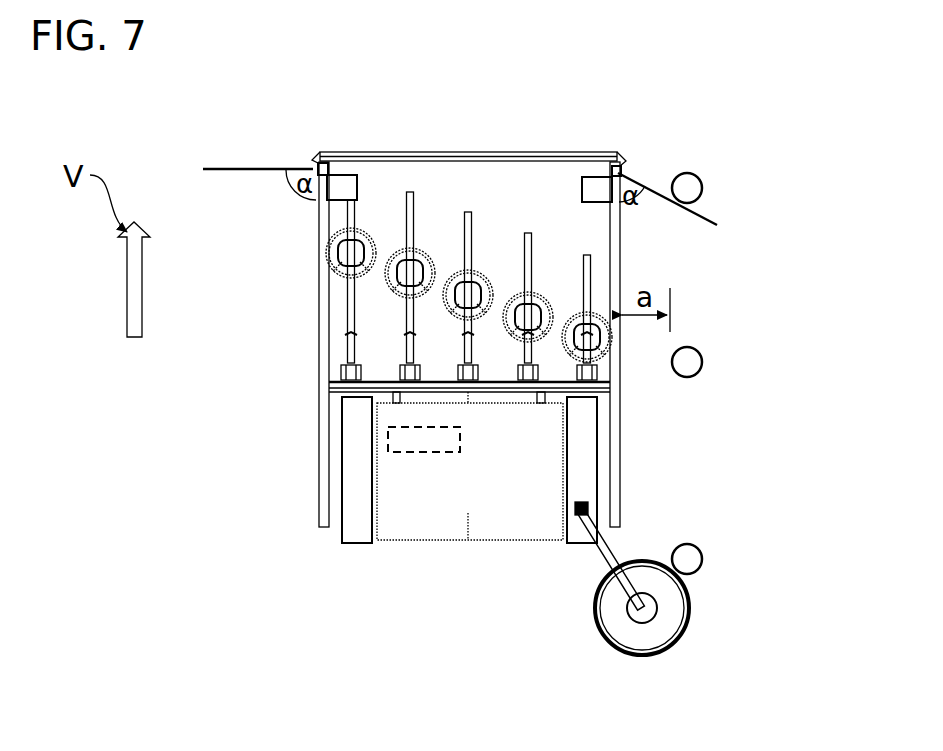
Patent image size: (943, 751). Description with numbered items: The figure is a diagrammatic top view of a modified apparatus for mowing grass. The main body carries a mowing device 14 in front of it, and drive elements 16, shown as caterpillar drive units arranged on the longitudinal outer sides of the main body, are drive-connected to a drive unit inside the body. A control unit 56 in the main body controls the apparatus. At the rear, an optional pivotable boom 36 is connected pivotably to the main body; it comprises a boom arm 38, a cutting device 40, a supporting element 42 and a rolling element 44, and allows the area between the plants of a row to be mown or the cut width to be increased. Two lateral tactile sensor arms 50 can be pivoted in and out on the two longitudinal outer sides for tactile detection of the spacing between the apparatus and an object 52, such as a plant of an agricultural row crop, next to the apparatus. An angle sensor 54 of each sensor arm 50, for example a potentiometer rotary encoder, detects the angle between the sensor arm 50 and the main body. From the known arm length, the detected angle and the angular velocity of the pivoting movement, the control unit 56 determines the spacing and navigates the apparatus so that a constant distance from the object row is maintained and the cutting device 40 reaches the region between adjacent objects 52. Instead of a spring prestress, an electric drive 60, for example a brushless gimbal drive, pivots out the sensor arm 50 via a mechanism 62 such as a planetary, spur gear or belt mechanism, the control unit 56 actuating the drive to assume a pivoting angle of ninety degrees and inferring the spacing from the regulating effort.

The mowing device 14 is at (293, 286).
The drive elements 16 is at (583, 467).
The boom 36 is at (580, 588).
The boom arm 38 is at (600, 548).
The cutting device 40 is at (646, 653).
The supporting element 42 is at (650, 655).
The rolling element 44 is at (606, 652).
The tactile sensor arms 50 is at (240, 168).
The object 52 is at (690, 188).
The angle sensor 54 is at (327, 178).
The control unit 56 is at (387, 437).
The electric drive 60 is at (359, 188).
The mechanism 62 is at (312, 166).